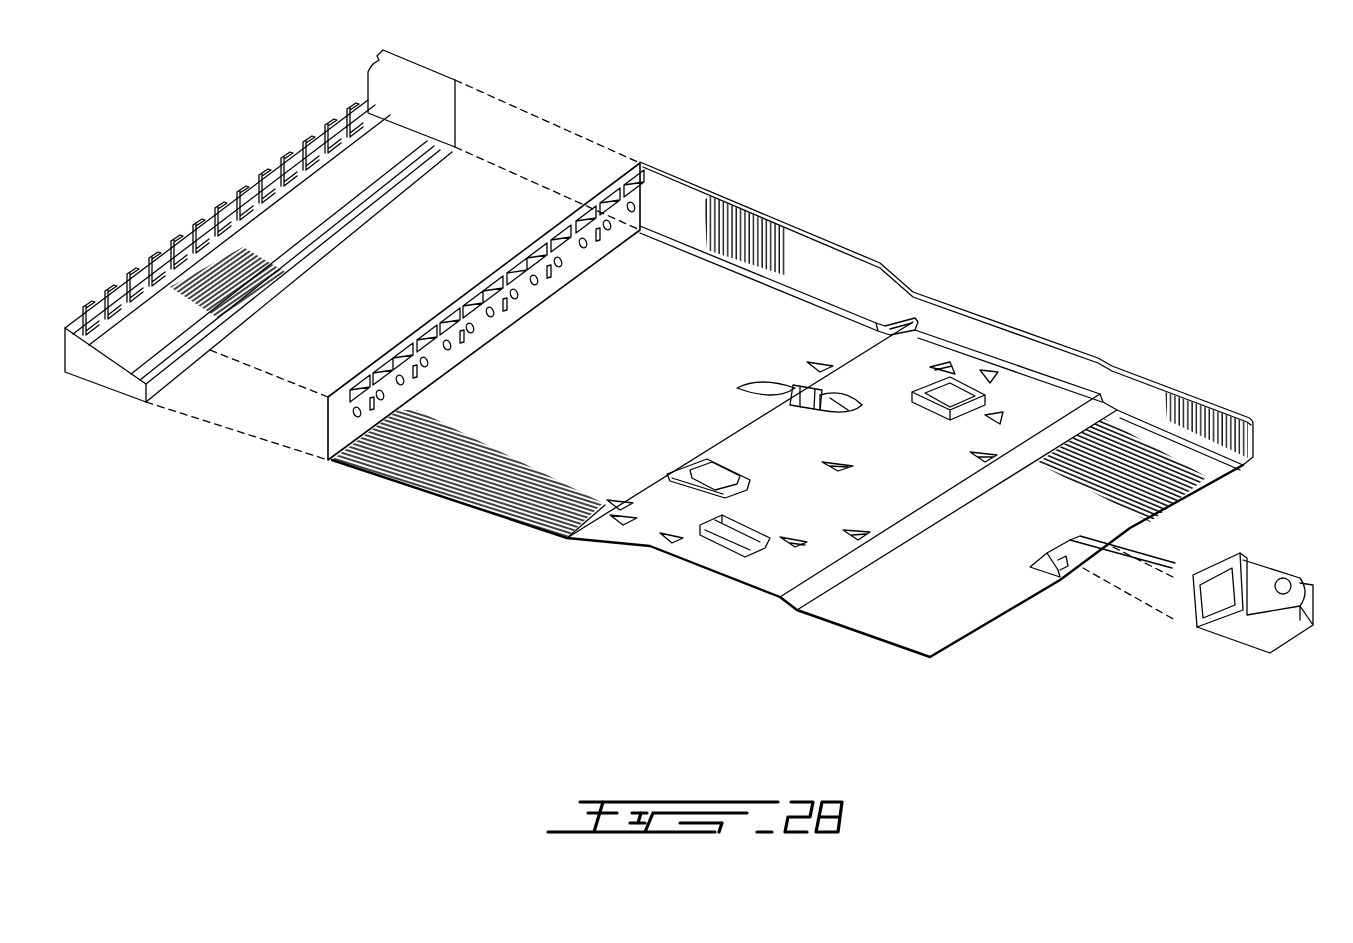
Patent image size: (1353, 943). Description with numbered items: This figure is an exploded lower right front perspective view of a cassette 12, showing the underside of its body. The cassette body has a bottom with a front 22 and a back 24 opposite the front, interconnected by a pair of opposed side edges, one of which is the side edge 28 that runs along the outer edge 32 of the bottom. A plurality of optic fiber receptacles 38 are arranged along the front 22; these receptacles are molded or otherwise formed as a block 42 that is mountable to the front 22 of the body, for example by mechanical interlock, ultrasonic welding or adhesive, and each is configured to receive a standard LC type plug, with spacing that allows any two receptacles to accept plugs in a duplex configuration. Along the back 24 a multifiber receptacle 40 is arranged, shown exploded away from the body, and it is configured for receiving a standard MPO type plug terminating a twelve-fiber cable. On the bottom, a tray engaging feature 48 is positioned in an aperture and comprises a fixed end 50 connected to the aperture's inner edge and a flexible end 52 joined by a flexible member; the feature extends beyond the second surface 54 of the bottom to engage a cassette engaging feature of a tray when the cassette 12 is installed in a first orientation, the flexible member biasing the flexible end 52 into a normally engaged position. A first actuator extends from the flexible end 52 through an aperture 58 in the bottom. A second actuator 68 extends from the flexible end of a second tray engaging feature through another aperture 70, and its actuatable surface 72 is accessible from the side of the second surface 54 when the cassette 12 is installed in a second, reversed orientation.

The cassette 12 is at (1167, 207).
The front 22 is at (632, 183).
The back 24 is at (1043, 588).
The side edge 28 is at (813, 263).
The outer edge 32 is at (815, 294).
The optic fiber receptacles 38 is at (233, 175).
The multifiber receptacle 40 is at (1283, 560).
The block 42 is at (410, 88).
The tray engaging feature 48 is at (710, 489).
The fixed end 50 is at (683, 478).
The flexible end 52 is at (738, 493).
The second surface 54 is at (516, 465).
The aperture 58 is at (732, 455).
The second actuator 68 is at (840, 407).
The aperture 70 is at (783, 397).
The actuatable surface 72 is at (817, 410).